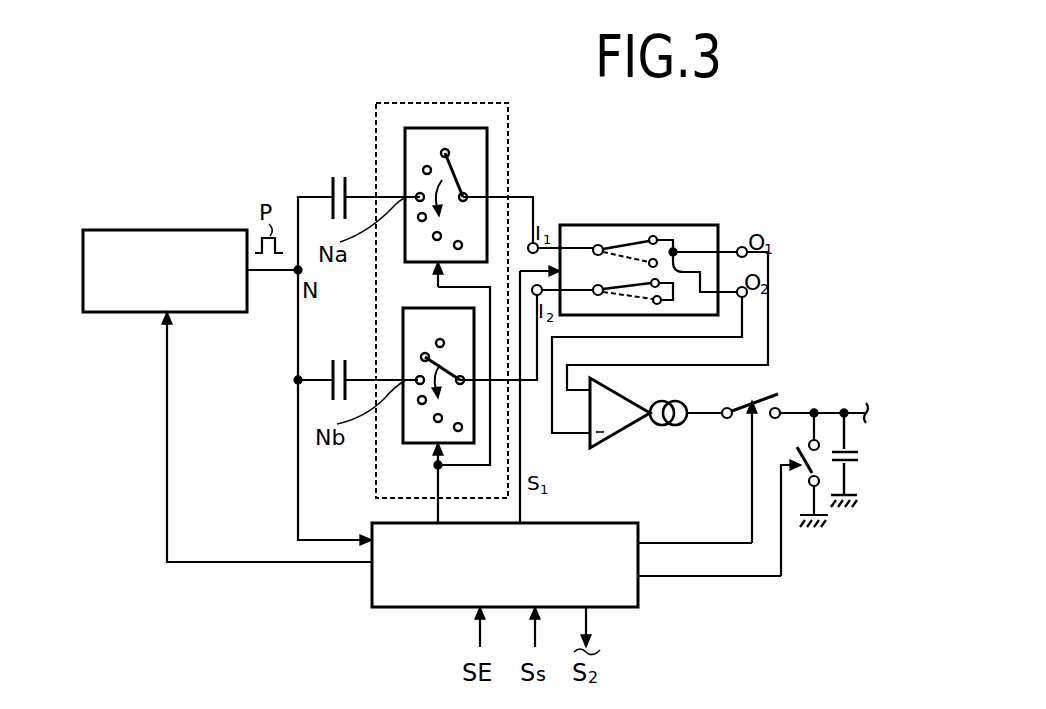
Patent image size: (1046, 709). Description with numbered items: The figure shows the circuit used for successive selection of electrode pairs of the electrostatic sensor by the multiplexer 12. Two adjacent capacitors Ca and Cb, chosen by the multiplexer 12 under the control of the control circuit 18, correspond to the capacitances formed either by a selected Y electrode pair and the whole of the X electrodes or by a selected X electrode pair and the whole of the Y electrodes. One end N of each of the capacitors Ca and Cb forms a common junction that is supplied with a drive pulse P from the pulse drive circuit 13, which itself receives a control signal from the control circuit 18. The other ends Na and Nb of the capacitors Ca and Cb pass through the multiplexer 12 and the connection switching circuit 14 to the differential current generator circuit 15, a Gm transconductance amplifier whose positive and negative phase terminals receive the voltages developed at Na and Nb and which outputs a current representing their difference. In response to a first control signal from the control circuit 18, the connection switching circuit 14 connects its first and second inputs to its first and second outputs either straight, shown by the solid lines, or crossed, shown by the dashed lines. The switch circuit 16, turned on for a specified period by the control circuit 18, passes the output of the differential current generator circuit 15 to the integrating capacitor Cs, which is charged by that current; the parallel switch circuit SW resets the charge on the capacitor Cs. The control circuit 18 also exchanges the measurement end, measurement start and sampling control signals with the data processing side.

The multiplexer 12 is at (510, 113).
The pulse drive circuit 13 is at (152, 230).
The connection switching circuit 14 is at (684, 225).
The differential current generator circuit 15 is at (614, 388).
The switch circuit 16 is at (770, 397).
The control circuit 18 is at (639, 523).
The capacitor Ca is at (341, 183).
The capacitor Cb is at (341, 367).
The integrating capacitor Cs is at (862, 460).
The switch circuit SW is at (793, 494).